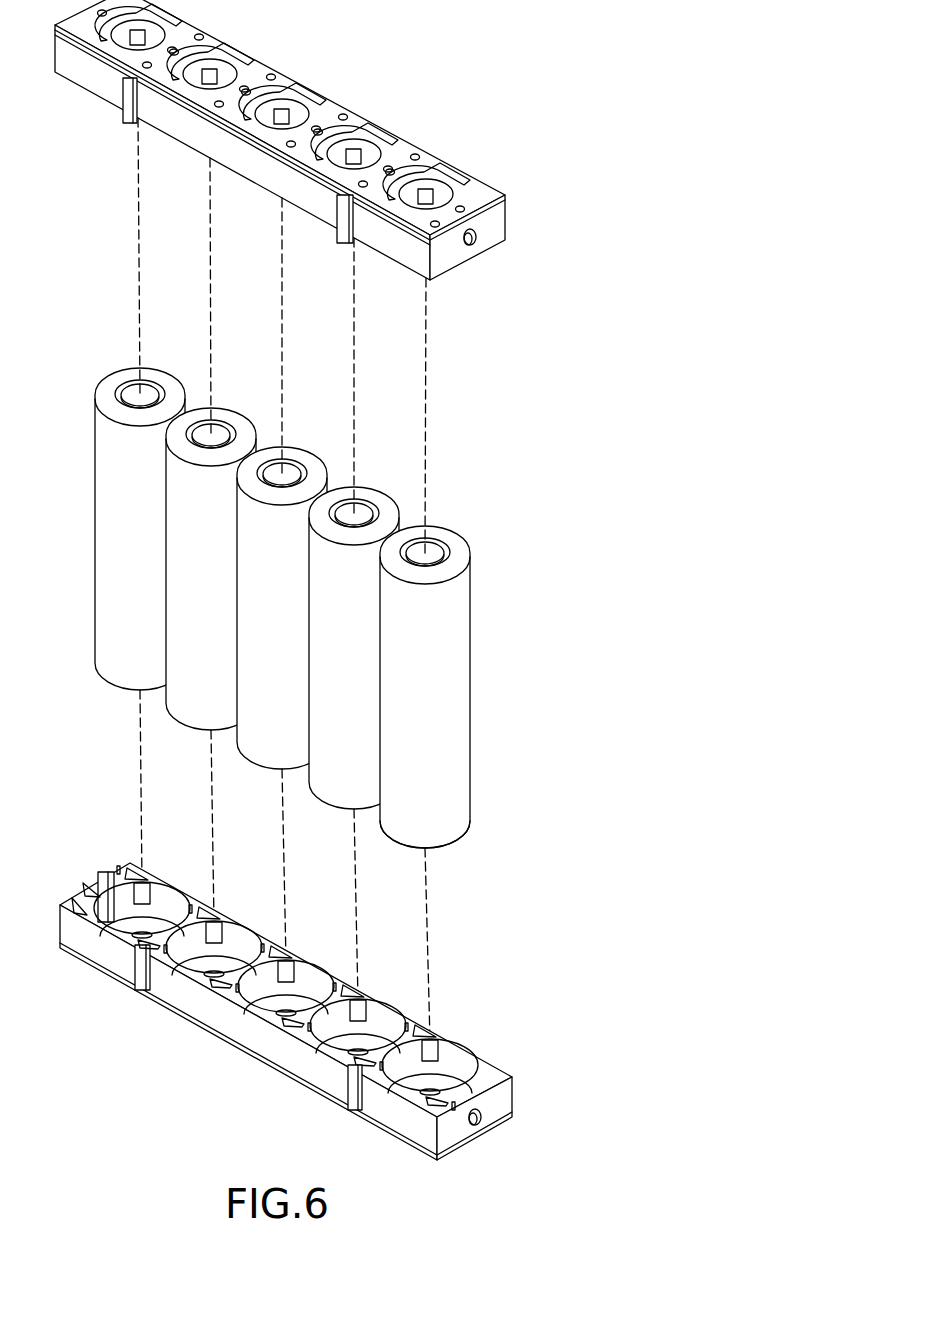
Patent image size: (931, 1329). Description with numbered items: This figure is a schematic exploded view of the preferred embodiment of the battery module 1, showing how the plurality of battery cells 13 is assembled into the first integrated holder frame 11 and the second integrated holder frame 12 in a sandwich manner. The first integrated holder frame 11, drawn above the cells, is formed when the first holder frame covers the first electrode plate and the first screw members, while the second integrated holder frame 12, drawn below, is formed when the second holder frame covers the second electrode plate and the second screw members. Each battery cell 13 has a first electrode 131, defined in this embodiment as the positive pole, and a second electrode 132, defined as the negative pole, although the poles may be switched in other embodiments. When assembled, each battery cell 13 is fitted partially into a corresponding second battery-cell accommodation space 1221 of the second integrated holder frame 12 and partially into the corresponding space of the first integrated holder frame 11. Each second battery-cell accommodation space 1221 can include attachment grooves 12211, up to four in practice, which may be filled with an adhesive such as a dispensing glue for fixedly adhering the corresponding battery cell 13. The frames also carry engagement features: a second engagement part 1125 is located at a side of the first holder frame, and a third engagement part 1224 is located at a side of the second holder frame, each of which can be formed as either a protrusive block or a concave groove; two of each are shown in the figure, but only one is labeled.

The battery module 1 is at (348, 601).
The first integrated holder frame 11 is at (436, 108).
The second integrated holder frame 12 is at (320, 1033).
The battery cells 13 is at (323, 640).
The first electrode 131 is at (435, 550).
The second electrode 132 is at (448, 855).
The second engagement part 1125 is at (347, 1082).
The second battery-cell accommodation space 1221 is at (451, 1062).
The third engagement part 1224 is at (433, 1040).
The attachment groove 12211 is at (402, 1082).